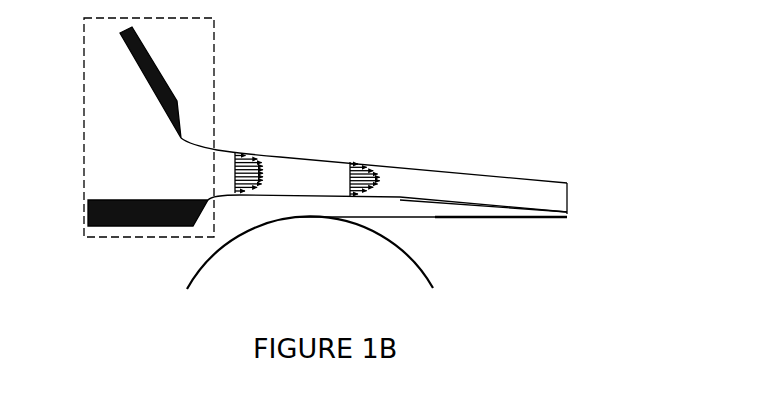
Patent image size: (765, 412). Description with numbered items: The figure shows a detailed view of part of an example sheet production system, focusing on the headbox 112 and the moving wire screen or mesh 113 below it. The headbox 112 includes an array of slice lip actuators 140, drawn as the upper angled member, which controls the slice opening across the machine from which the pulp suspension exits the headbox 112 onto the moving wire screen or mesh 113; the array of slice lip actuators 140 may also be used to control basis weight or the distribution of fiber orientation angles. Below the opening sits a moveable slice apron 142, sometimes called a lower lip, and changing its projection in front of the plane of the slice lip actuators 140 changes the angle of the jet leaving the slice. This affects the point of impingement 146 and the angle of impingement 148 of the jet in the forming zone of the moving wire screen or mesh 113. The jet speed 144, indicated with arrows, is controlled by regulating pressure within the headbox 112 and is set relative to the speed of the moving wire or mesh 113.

The headbox 112 is at (82, 73).
The slice lip actuators 140 is at (133, 74).
The slice apron 142 is at (157, 197).
The jet speed 144 is at (359, 152).
The point of impingement 146 is at (568, 207).
The angle of impingement 148 is at (500, 190).
The moving wire screen or mesh 113 is at (437, 224).